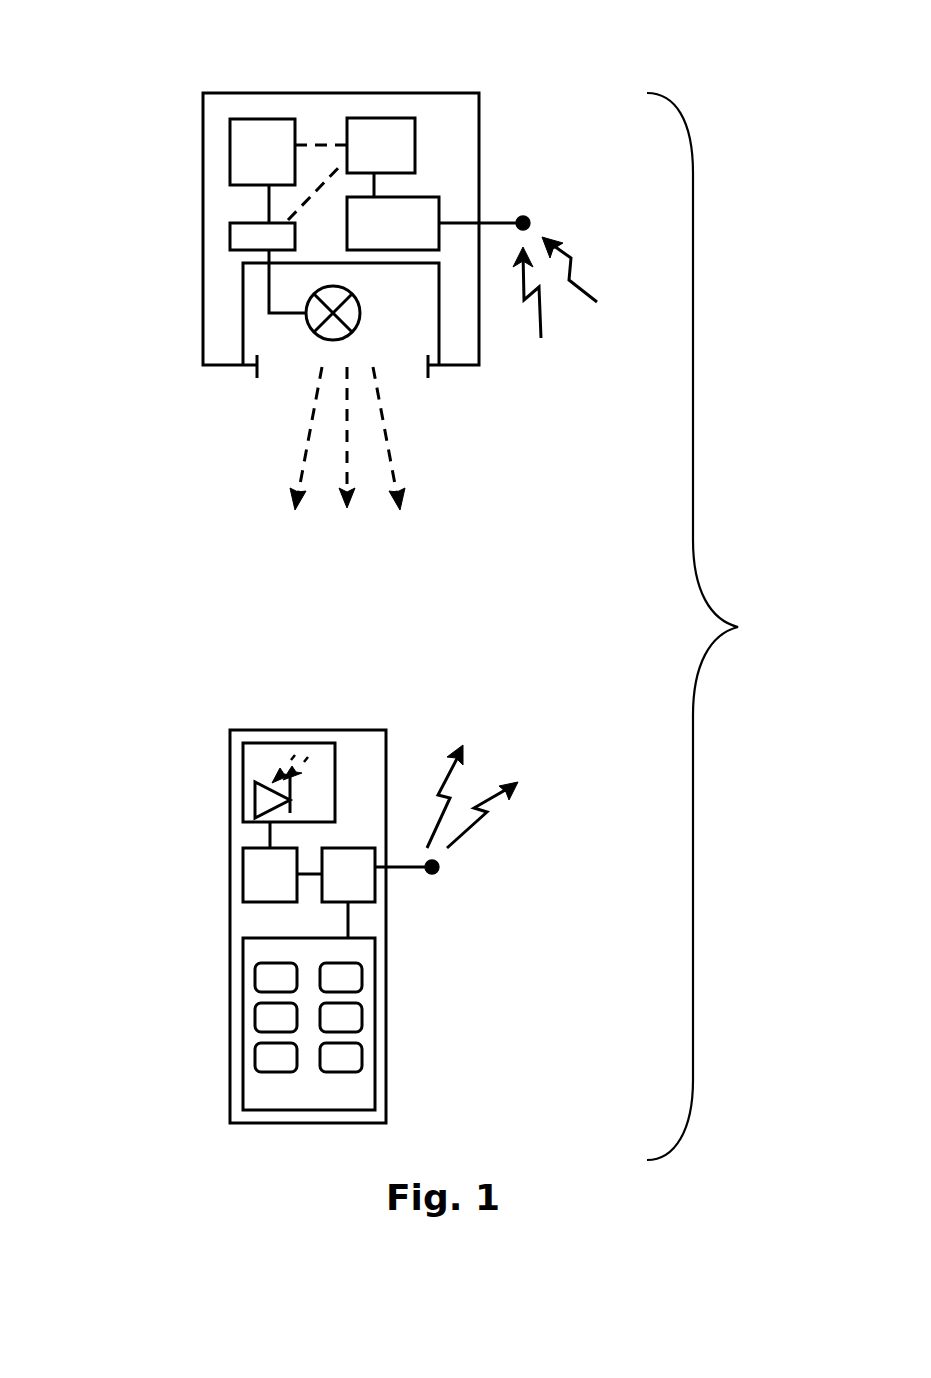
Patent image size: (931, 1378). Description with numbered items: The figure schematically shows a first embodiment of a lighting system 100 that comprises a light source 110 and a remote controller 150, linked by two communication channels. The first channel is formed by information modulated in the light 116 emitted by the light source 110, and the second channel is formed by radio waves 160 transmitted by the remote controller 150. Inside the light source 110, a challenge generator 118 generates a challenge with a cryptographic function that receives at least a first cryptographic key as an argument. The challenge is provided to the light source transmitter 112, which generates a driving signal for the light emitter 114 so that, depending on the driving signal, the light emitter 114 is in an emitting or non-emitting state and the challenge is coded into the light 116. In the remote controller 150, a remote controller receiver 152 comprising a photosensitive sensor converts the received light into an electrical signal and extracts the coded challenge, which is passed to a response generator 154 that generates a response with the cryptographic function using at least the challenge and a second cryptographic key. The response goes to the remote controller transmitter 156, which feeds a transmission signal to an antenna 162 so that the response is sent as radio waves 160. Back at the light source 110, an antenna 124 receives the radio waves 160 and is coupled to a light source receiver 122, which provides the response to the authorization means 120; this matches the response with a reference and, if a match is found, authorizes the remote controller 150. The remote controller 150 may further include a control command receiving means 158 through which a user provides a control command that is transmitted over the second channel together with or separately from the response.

The system 100 is at (723, 626).
The light source 110 is at (203, 158).
The light source transmitter 112 is at (243, 235).
The light emitter 114 is at (308, 330).
The light 116 is at (297, 435).
The challenge generator 118 is at (267, 132).
The authorization means 120 is at (383, 132).
The light source receiver 122 is at (428, 210).
The antenna 124 is at (523, 215).
The remote controller 150 is at (230, 1095).
The remote controller receiver 152 is at (243, 772).
The response generator 154 is at (243, 862).
The remote controller transmitter 156 is at (335, 893).
The control command receiving means 158 is at (243, 980).
The radio waves 160 is at (492, 810).
The antenna 162 is at (417, 875).